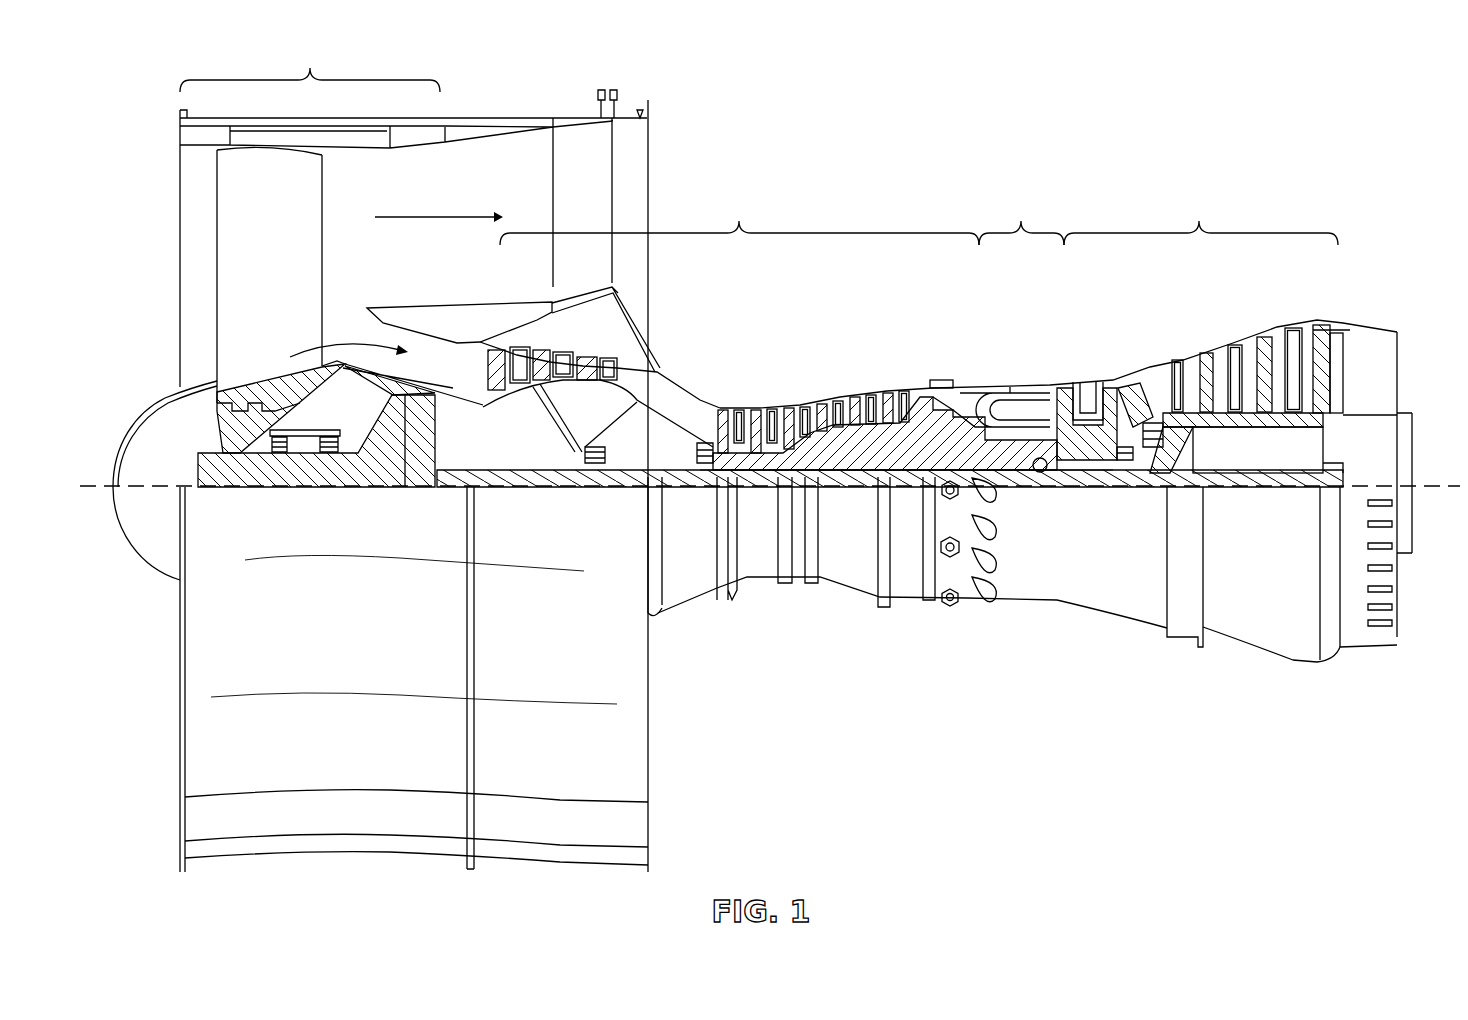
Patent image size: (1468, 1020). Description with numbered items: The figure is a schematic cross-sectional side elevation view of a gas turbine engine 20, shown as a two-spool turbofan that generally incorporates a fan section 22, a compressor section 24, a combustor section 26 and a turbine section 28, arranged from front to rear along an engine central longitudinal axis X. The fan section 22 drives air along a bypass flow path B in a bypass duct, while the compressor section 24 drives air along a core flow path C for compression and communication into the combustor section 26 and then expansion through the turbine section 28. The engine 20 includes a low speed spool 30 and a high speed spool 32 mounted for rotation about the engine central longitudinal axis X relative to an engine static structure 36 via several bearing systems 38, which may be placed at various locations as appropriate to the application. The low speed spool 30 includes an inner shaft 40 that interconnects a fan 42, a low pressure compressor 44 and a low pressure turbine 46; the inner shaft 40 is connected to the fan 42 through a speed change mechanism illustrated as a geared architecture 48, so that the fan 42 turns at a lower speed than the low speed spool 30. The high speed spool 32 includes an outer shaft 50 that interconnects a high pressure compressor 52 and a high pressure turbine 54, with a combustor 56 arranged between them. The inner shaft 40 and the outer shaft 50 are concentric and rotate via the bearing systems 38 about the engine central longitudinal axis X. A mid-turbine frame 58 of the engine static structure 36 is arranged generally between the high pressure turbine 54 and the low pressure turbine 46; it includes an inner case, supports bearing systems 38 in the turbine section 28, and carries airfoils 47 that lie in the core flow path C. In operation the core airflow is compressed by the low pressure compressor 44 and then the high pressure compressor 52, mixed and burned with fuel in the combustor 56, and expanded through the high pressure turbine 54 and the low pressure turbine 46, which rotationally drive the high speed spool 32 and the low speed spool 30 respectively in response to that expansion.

The gas turbine engine 20 is at (1291, 83).
The fan section 22 is at (414, 449).
The compressor section 24 is at (739, 216).
The combustor section 26 is at (1021, 216).
The turbine section 28 is at (1201, 216).
The low speed spool 30 is at (864, 495).
The high speed spool 32 is at (925, 440).
The engine static structure 36 is at (914, 608).
The bearing systems 38 is at (280, 452).
The inner shaft 40 is at (667, 478).
The fan 42 is at (255, 250).
The low pressure compressor 44 is at (560, 355).
The low pressure turbine 46 is at (1264, 328).
The airfoils 47 is at (612, 368).
The geared architecture 48 is at (413, 455).
The outer shaft 50 is at (1045, 478).
The high pressure compressor 52 is at (830, 440).
The high pressure turbine 54 is at (1088, 383).
The combustor 56 is at (1005, 410).
The mid-turbine frame 58 is at (1153, 358).
The bypass flow path B is at (441, 216).
The core flow path C is at (308, 340).
The engine central longitudinal axis X is at (1425, 489).